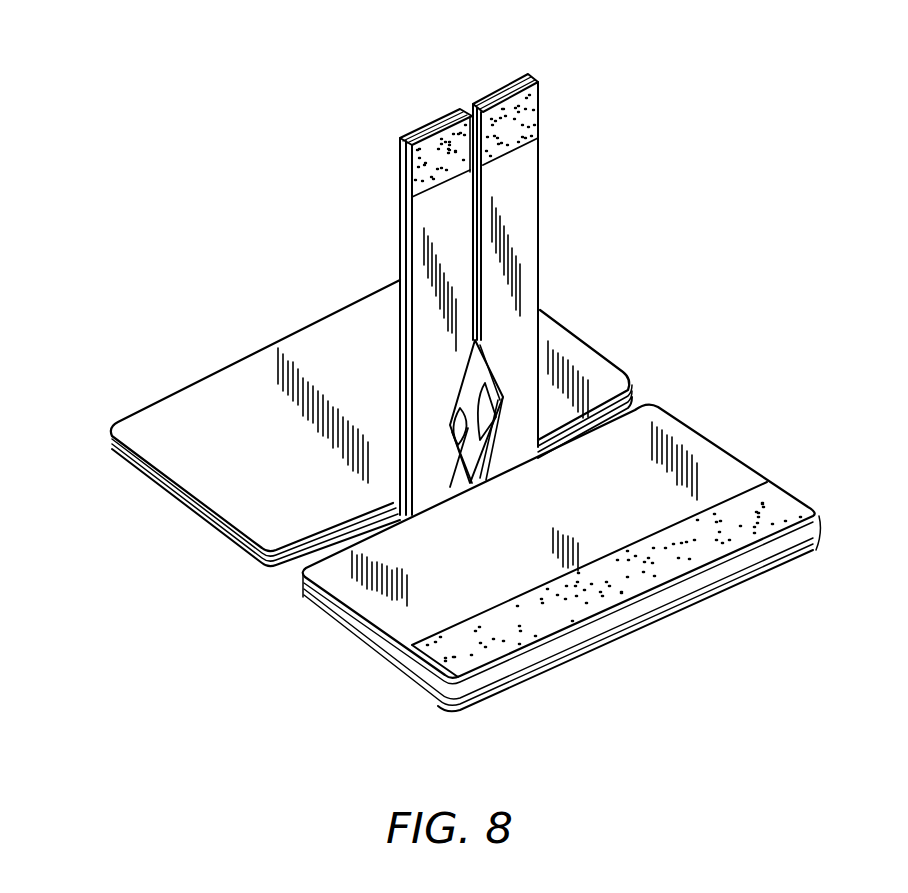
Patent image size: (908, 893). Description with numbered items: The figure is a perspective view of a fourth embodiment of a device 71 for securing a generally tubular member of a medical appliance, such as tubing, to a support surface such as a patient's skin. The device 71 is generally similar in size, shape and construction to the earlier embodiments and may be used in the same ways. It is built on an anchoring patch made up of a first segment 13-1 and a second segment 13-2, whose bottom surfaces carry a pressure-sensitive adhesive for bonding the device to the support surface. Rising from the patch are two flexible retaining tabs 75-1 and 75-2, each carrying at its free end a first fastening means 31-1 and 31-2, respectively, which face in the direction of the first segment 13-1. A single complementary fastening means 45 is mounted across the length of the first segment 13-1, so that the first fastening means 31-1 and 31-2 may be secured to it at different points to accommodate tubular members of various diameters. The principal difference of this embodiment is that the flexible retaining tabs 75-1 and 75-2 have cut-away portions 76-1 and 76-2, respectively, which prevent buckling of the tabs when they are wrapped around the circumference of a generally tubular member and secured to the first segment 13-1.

The device 71 is at (280, 169).
The first segment 13-1 is at (740, 455).
The second segment 13-2 is at (600, 355).
The complementary fastening means 45 is at (472, 650).
The flexible retaining tab 75-1 is at (381, 287).
The flexible retaining tab 75-2 is at (565, 233).
The first fastening means 31-1 is at (440, 157).
The first fastening means 31-2 is at (503, 122).
The cut-away portion 76-1 is at (458, 452).
The cut-away portion 76-2 is at (490, 450).